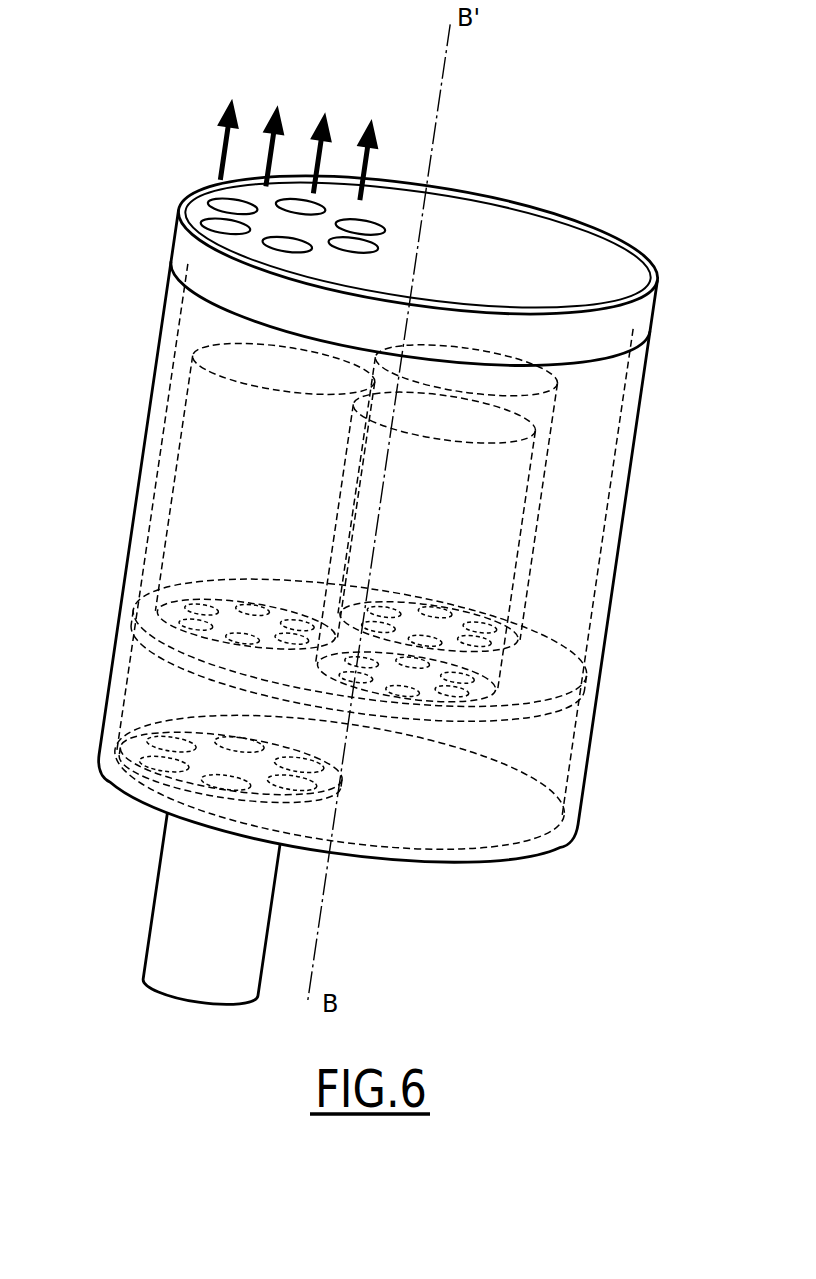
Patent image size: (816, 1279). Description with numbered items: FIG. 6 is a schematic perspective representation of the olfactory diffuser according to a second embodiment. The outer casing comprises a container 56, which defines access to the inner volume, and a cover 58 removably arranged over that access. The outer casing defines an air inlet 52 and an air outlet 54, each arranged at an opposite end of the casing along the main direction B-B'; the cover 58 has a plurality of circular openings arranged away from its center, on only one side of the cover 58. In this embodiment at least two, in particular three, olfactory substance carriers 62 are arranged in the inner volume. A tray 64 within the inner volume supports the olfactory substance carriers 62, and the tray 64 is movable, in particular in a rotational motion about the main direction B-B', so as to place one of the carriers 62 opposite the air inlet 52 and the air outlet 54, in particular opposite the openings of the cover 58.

The air inlet 52 is at (171, 800).
The air outlet 54 is at (172, 166).
The container 56 is at (646, 427).
The cover 58 is at (658, 312).
The olfactory substance carrier 62 is at (203, 464).
The tray 64 is at (584, 701).